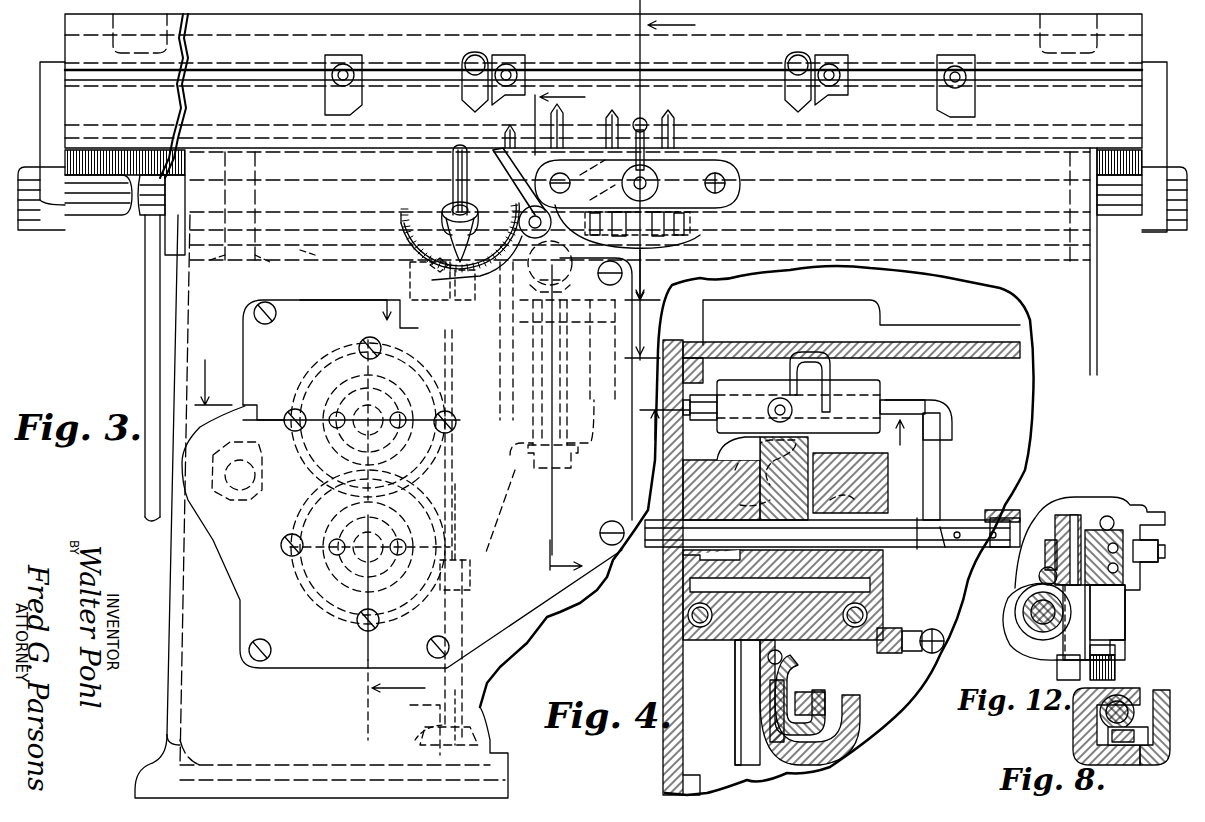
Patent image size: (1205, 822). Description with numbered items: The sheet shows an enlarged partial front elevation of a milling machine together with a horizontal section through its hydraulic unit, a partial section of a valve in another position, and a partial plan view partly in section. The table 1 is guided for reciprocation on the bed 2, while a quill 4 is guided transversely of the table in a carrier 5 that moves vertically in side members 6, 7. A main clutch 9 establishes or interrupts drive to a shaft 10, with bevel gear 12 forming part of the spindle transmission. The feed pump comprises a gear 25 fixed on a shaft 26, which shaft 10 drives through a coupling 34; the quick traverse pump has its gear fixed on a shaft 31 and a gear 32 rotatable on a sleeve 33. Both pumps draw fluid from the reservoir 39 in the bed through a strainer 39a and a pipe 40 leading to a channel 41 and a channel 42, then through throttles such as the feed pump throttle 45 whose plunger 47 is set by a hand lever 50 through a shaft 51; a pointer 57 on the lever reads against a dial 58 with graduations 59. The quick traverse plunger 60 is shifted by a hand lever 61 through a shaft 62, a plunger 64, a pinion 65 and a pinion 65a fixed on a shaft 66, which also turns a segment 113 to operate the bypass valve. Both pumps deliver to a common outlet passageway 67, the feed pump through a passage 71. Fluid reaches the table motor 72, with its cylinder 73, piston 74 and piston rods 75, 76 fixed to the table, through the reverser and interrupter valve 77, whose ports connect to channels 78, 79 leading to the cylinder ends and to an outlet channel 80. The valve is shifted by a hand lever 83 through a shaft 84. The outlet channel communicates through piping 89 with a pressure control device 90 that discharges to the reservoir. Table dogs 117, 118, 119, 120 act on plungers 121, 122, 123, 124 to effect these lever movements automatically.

In FIG. 3, the table 1 is at (60, 206).
In FIG. 3, the bed 2 is at (195, 340).
In FIG. 3, the quill 4 is at (427, 348).
In FIG. 3, the carrier 5 is at (631, 285).
In FIG. 3, the side member 6 is at (484, 414).
In FIG. 4, the side member 7 is at (800, 440).
In FIG. 4, the main clutch 9 is at (775, 436).
In FIG. 12, the shaft 10 is at (1008, 525).
In FIG. 3, the bevel gear 12 is at (484, 285).
In FIG. 4, the gear 25 is at (690, 565).
In FIG. 3, the shaft 26 is at (318, 448).
In FIG. 4, the shaft 26 is at (935, 530).
In FIG. 3, the shaft 31 is at (310, 520).
In FIG. 4, the gear 32 is at (880, 475).
In FIG. 4, the sleeve 33 is at (880, 495).
In FIG. 4, the coupling 34 is at (978, 510).
In FIG. 3, the reservoir 39 is at (167, 735).
In FIG. 3, the strainer 39a is at (410, 742).
In FIG. 3, the pipe 40 is at (445, 712).
In FIG. 3, the channel 41 is at (475, 532).
In FIG. 4, the channel 42 is at (738, 648).
In FIG. 3, the feed pump throttle 45 is at (462, 436).
In FIG. 4, the plunger 47 is at (700, 620).
In FIG. 3, the hand lever 50 is at (453, 165).
In FIG. 3, the shaft 51 is at (452, 210).
In FIG. 3, the pointer 57 is at (445, 240).
In FIG. 3, the dial 58 is at (520, 220).
In FIG. 3, the graduations 59 is at (408, 250).
In FIG. 4, the plunger 60 is at (890, 626).
In FIG. 12, the plunger 60 is at (1108, 517).
In FIG. 3, the hand lever 61 is at (506, 158).
In FIG. 3, the shaft 62 is at (505, 262).
In FIG. 12, the plunger 64 is at (1039, 576).
In FIG. 12, the pinion 65 is at (1030, 588).
In FIG. 12, the pinion 65a is at (1104, 517).
In FIG. 12, the shaft 66 is at (1063, 607).
In FIG. 4, the common outlet passageway 67 is at (768, 680).
In FIG. 8, the common outlet passageway 67 is at (1100, 716).
In FIG. 4, the passage 71 is at (738, 455).
In FIG. 3, the table motor 72 is at (165, 256).
In FIG. 3, the cylinder 73 is at (305, 250).
In FIG. 3, the piston 74 is at (240, 252).
In FIG. 3, the piston rod 75 is at (105, 195).
In FIG. 3, the piston rod 76 is at (1125, 208).
In FIG. 3, the reverser and interrupter valve 77 is at (548, 342).
In FIG. 4, the reverser and interrupter valve 77 is at (752, 715).
In FIG. 8, the reverser and interrupter valve 77 is at (1160, 695).
In FIG. 4, the channel 78 is at (858, 686).
In FIG. 8, the channel 78 is at (1132, 696).
In FIG. 4, the channel 79 is at (840, 708).
In FIG. 8, the channel 79 is at (1108, 740).
In FIG. 4, the outlet channel 80 is at (802, 725).
In FIG. 8, the outlet channel 80 is at (1140, 742).
In FIG. 3, the hand lever 83 is at (643, 120).
In FIG. 3, the shaft 84 is at (725, 172).
In FIG. 4, the piping 89 is at (942, 456).
In FIG. 4, the pressure control device 90 is at (860, 405).
In FIG. 12, the segment 113 is at (1118, 665).
In FIG. 3, the table dog 117 is at (352, 98).
In FIG. 3, the table dog 118 is at (478, 105).
In FIG. 3, the table dog 119 is at (798, 105).
In FIG. 3, the table dog 120 is at (945, 95).
In FIG. 3, the plunger 121 is at (505, 136).
In FIG. 3, the plunger 122 is at (563, 128).
In FIG. 3, the plunger 123 is at (612, 118).
In FIG. 3, the plunger 124 is at (672, 120).